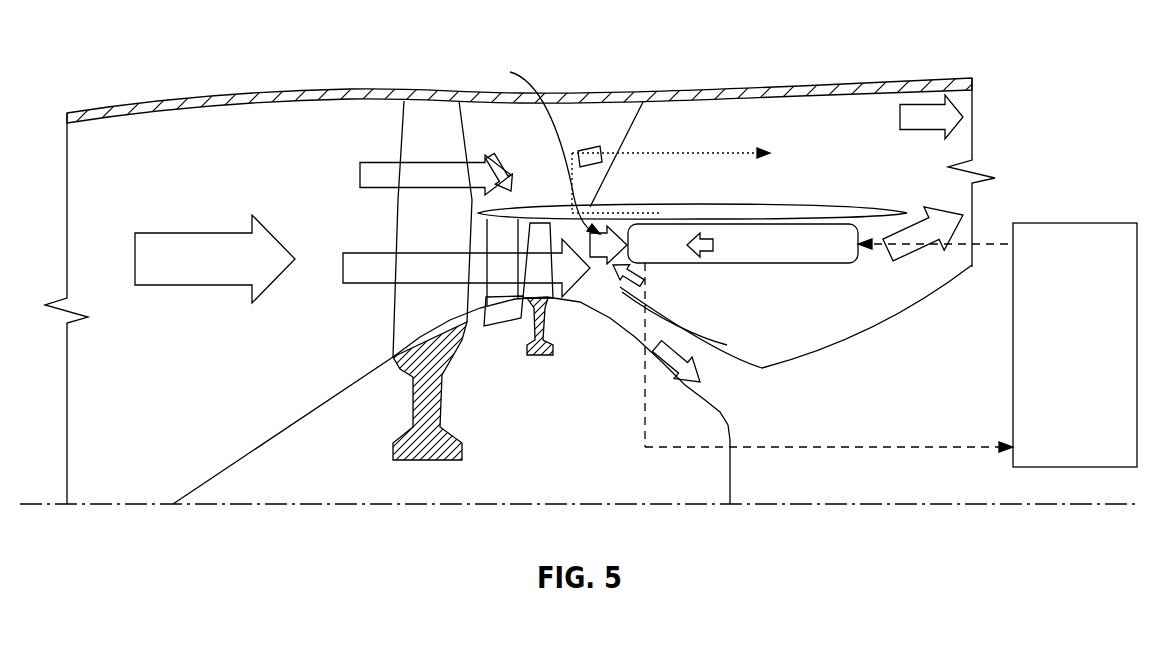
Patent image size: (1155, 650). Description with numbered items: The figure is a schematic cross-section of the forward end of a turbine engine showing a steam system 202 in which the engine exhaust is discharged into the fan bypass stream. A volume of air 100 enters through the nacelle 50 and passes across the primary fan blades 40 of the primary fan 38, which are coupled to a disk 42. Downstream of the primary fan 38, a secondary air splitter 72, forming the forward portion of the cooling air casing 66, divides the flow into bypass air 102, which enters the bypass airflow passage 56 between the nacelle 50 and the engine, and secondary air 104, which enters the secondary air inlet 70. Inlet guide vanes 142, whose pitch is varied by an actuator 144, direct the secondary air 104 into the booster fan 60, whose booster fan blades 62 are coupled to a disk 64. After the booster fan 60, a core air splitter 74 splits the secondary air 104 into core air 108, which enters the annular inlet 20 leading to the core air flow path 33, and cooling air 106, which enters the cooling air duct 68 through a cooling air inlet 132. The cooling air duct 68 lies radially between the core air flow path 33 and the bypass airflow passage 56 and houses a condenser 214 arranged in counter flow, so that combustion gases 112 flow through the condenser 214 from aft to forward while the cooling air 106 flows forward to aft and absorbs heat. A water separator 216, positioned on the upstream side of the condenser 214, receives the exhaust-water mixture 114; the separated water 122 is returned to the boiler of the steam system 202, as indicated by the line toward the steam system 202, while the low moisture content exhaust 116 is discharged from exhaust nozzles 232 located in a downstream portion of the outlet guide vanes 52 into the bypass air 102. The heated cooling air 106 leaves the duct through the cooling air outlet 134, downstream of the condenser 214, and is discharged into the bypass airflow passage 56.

The annular inlet 20 is at (645, 335).
The core air flow path 33 is at (733, 398).
The primary fan 38 is at (388, 205).
The primary fan blades 40 is at (423, 150).
The disk 42 is at (412, 383).
The nacelle 50 is at (212, 90).
The outlet guide vanes 52 is at (618, 108).
The bypass airflow passage 56 is at (803, 194).
The booster fan 60 is at (538, 146).
The booster fan blades 62 is at (547, 235).
The disk 64 is at (557, 345).
The cooling air casing 66 is at (890, 209).
The cooling air duct 68 is at (658, 285).
The secondary air inlet 70 is at (480, 238).
The secondary air splitter 72 is at (488, 154).
The core air splitter 74 is at (723, 343).
The volume of air 100 is at (160, 287).
The bypass air 102 is at (370, 173).
The secondary air 104 is at (363, 284).
The cooling air 106 is at (612, 262).
The core air 108 is at (647, 432).
The combustion gases 112 is at (998, 243).
The exhaust-water mixture 114 is at (705, 263).
The exhaust 116 is at (713, 153).
The water 122 is at (900, 447).
The cooling air inlet 132 is at (553, 190).
The cooling air outlet 134 is at (955, 252).
The inlet guide vanes 142 is at (493, 293).
The actuator 144 is at (507, 320).
The steam system 202 is at (1098, 361).
The condenser 214 is at (824, 224).
The water separator 216 is at (673, 224).
The exhaust nozzles 232 is at (593, 145).